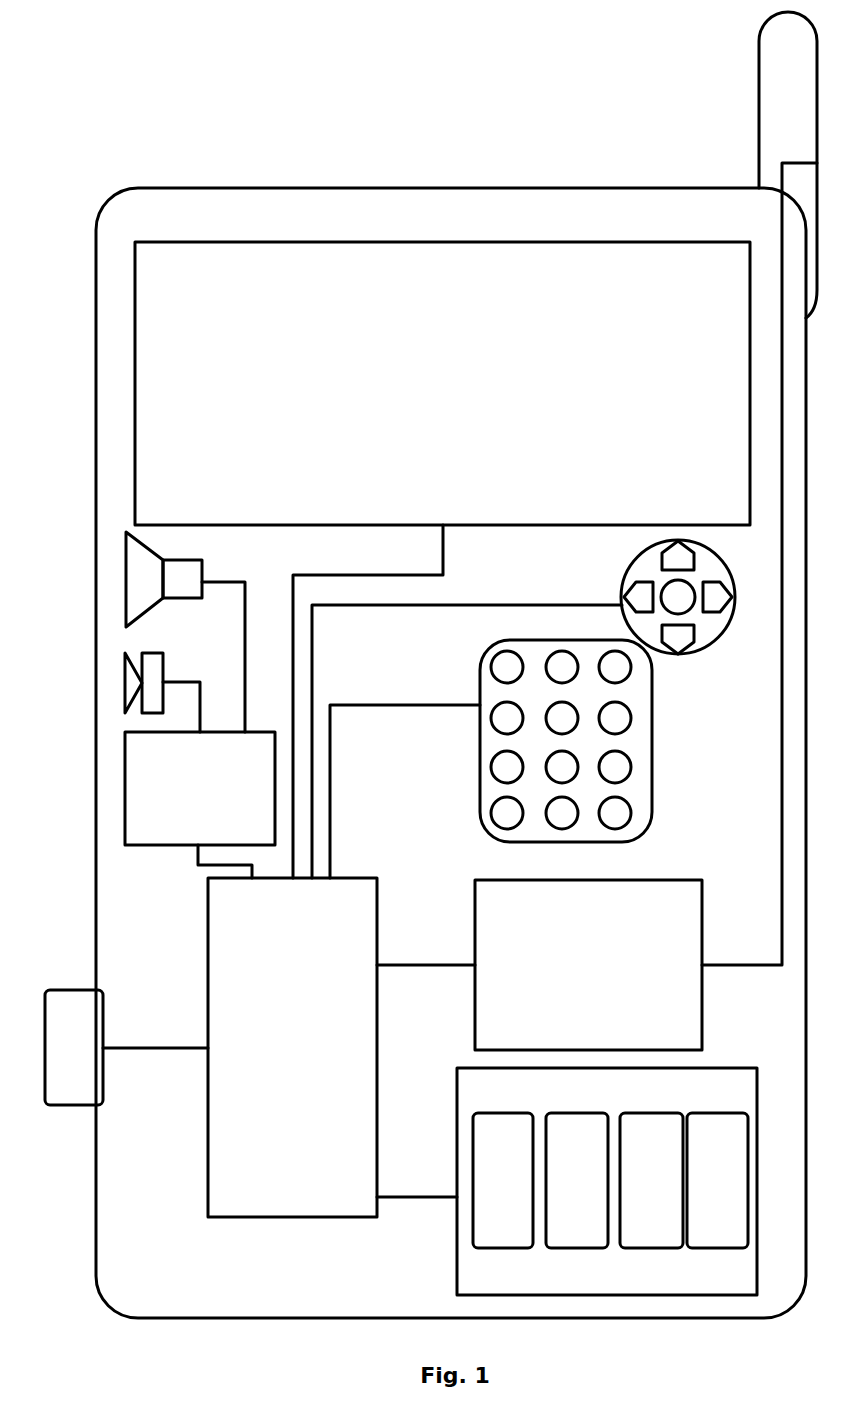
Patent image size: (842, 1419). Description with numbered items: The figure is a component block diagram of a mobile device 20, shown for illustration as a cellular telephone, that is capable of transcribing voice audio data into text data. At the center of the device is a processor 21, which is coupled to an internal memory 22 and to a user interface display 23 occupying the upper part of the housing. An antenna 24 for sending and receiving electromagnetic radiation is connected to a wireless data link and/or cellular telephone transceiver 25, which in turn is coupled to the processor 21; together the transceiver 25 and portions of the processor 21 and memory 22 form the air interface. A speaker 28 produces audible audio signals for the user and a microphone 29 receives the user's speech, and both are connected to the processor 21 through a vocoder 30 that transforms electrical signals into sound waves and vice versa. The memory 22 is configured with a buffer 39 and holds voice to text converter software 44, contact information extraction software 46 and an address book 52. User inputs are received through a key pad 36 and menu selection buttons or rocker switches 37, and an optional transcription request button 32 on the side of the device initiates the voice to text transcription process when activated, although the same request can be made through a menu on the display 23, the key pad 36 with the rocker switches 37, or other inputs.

The mobile device 20 is at (397, 188).
The processor 21 is at (284, 1059).
The internal memory 22 is at (607, 1181).
The user interface display 23 is at (410, 386).
The antenna 24 is at (759, 50).
The cellular telephone transceiver 25 is at (575, 972).
The speaker 28 is at (204, 572).
The microphone 29 is at (165, 665).
The vocoder 30 is at (187, 802).
The transcription request button 32 is at (126, 1047).
The key pad 36 is at (652, 787).
The menu selection buttons or rocker switches 37 is at (678, 654).
The buffer 39 is at (503, 1180).
The voice to text converter software 44 is at (577, 1180).
The contact information extraction software 46 is at (651, 1180).
The address book 52 is at (717, 1180).